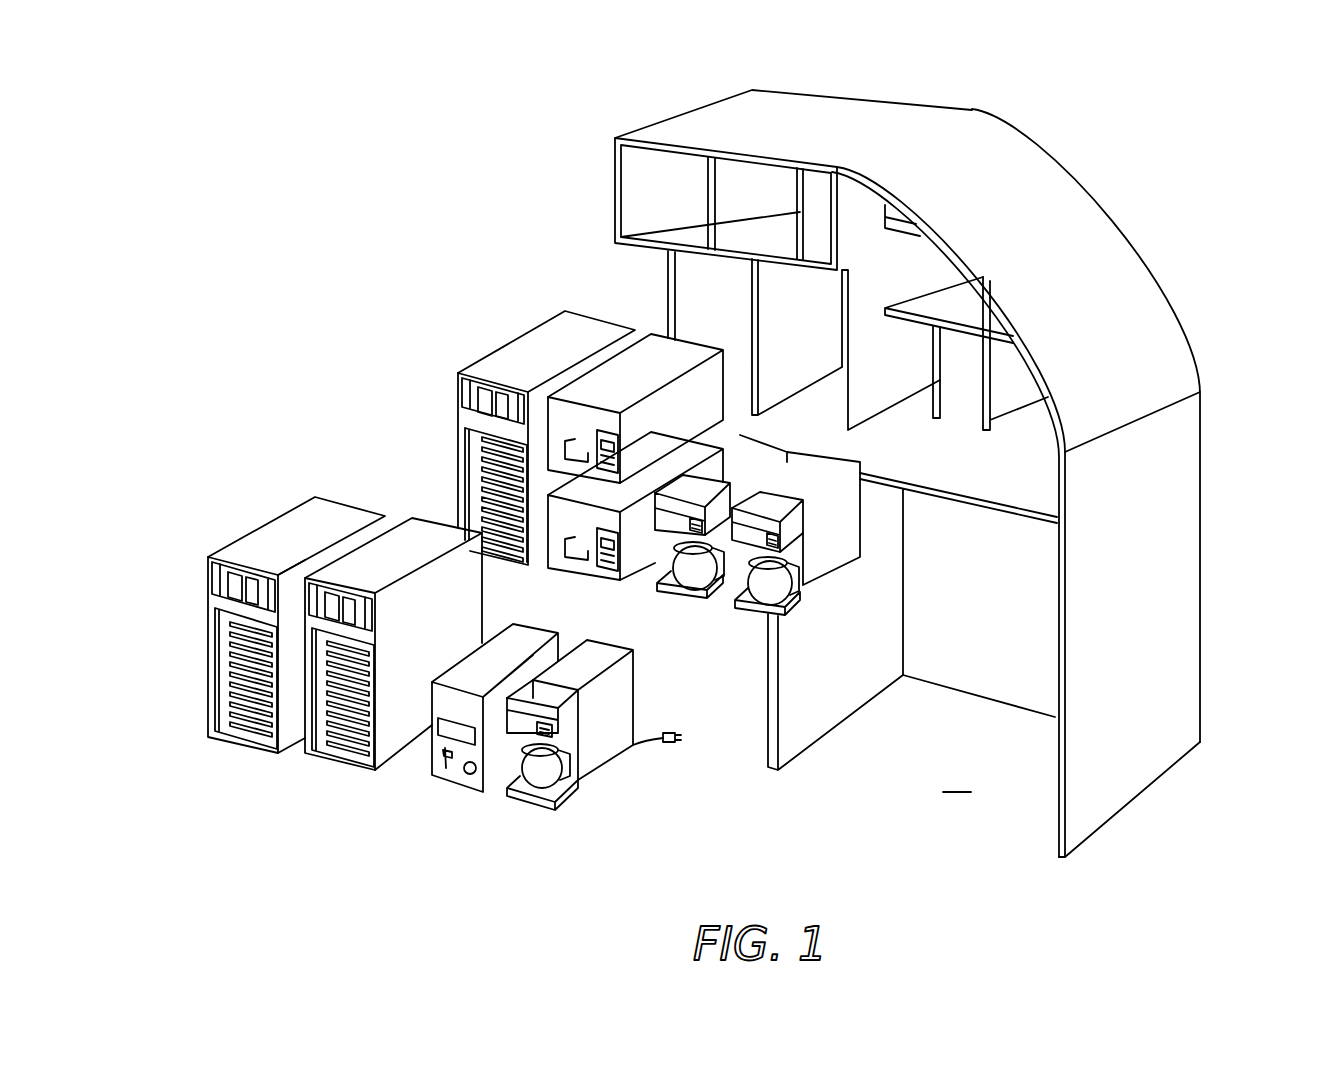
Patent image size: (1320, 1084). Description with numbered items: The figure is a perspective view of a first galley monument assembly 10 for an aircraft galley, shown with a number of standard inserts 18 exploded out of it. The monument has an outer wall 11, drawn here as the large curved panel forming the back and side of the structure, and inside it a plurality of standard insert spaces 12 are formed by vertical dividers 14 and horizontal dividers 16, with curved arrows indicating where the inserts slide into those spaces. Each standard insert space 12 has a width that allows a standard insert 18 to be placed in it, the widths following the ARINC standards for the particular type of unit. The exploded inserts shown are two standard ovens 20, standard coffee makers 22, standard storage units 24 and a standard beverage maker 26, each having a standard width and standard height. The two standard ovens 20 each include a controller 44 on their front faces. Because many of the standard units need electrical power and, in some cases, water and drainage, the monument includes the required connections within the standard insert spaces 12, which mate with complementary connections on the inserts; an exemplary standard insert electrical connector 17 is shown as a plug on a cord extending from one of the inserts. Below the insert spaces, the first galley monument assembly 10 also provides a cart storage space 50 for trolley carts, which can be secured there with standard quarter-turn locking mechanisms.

The first galley monument assembly 10 is at (1220, 152).
The outer wall 11 is at (1130, 268).
The standard insert spaces 12 is at (786, 296).
The vertical dividers 14 is at (802, 312).
The horizontal dividers 16 is at (767, 245).
The standard insert electrical connector 17 is at (650, 741).
The standard insert 18 is at (466, 324).
The standard ovens 20 is at (456, 428).
The standard coffee makers 22 is at (684, 598).
The standard storage units 24 is at (600, 382).
The standard beverage maker 26 is at (457, 782).
The controller 44 is at (480, 400).
The cart storage space 50 is at (957, 779).